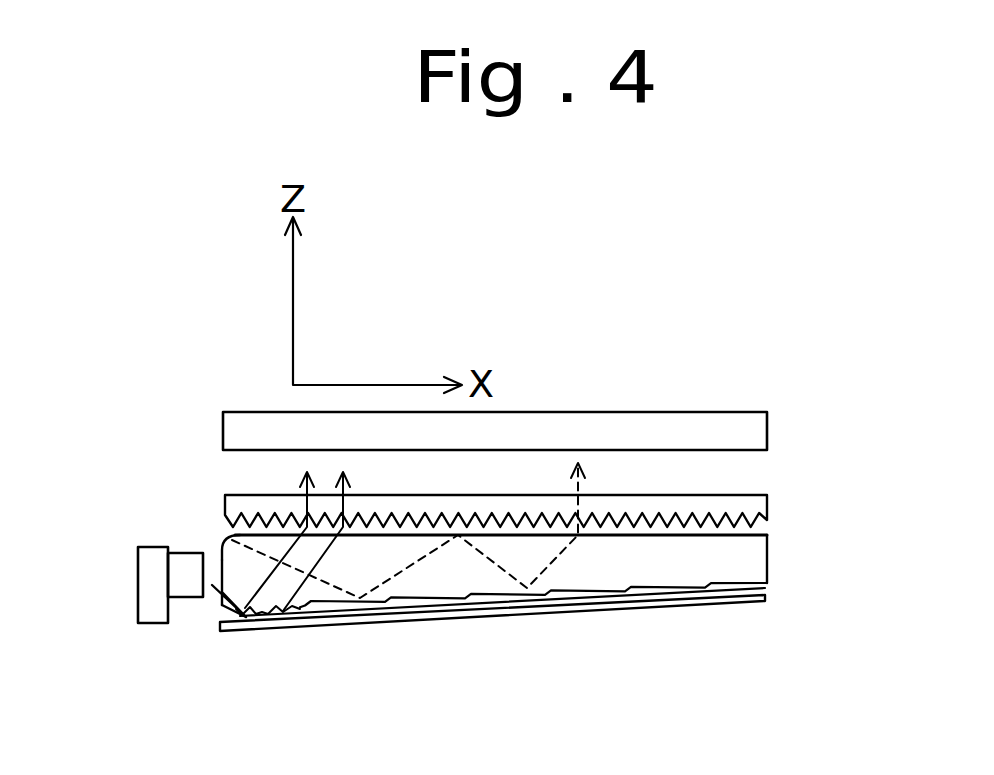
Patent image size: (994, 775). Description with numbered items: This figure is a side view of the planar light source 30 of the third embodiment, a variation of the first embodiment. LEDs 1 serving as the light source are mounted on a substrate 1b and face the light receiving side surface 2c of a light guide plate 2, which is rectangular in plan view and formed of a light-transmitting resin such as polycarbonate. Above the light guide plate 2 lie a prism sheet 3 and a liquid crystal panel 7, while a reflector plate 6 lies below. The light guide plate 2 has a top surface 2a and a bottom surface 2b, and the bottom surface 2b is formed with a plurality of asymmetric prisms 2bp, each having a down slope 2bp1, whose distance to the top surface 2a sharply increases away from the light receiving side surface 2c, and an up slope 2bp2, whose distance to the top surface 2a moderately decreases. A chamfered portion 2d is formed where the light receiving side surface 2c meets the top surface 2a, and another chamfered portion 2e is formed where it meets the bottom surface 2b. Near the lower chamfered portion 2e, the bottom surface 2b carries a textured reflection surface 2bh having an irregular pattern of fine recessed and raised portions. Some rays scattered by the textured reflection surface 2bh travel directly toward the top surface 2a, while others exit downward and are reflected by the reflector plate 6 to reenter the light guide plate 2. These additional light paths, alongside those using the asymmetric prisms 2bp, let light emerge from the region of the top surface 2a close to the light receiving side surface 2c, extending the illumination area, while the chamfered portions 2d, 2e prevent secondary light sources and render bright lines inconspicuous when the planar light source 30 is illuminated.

The planar light source 30 is at (216, 470).
The liquid crystal panel 7 is at (712, 410).
The prism sheet 3 is at (768, 494).
The light guide plate 2 is at (472, 590).
The top surface 2a is at (768, 539).
The bottom surface 2b is at (501, 659).
The textured reflection surface 2bh is at (255, 617).
The asymmetric prisms 2bp is at (503, 659).
The down slope 2bp1 is at (414, 612).
The up slope 2bp2 is at (408, 613).
The light receiving side surface 2c is at (218, 600).
The chamfered portion 2d is at (220, 533).
The chamfered portion 2e is at (222, 603).
The reflector plate 6 is at (743, 601).
The LEDs 1 is at (185, 552).
The substrate 1b is at (138, 597).